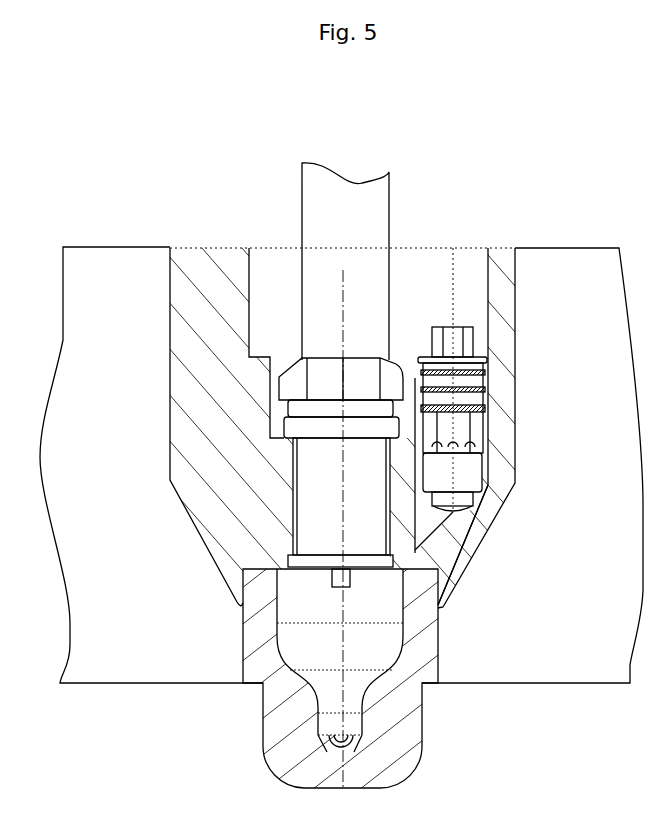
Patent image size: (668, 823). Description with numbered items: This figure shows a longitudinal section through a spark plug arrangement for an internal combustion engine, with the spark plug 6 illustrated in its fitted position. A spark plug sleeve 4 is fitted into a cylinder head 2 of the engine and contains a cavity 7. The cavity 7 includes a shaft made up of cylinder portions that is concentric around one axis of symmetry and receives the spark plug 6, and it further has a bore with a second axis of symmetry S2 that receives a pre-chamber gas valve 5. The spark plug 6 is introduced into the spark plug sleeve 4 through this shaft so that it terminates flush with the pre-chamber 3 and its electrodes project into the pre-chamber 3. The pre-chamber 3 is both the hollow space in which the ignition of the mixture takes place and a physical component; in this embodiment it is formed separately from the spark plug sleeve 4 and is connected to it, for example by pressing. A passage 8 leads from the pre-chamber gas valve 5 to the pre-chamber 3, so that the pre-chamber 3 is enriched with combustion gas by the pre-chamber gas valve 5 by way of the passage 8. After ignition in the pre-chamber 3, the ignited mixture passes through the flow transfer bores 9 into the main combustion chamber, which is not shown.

The cylinder head 2 is at (95, 387).
The pre-chamber 3 is at (417, 620).
The spark plug sleeve 4 is at (452, 430).
The pre-chamber gas valve 5 is at (462, 462).
The spark plug 6 is at (348, 226).
The cavity 7 is at (273, 288).
The passage 8 is at (432, 528).
The flow transfer bores 9 is at (393, 773).
The axis of symmetry S2 is at (484, 260).